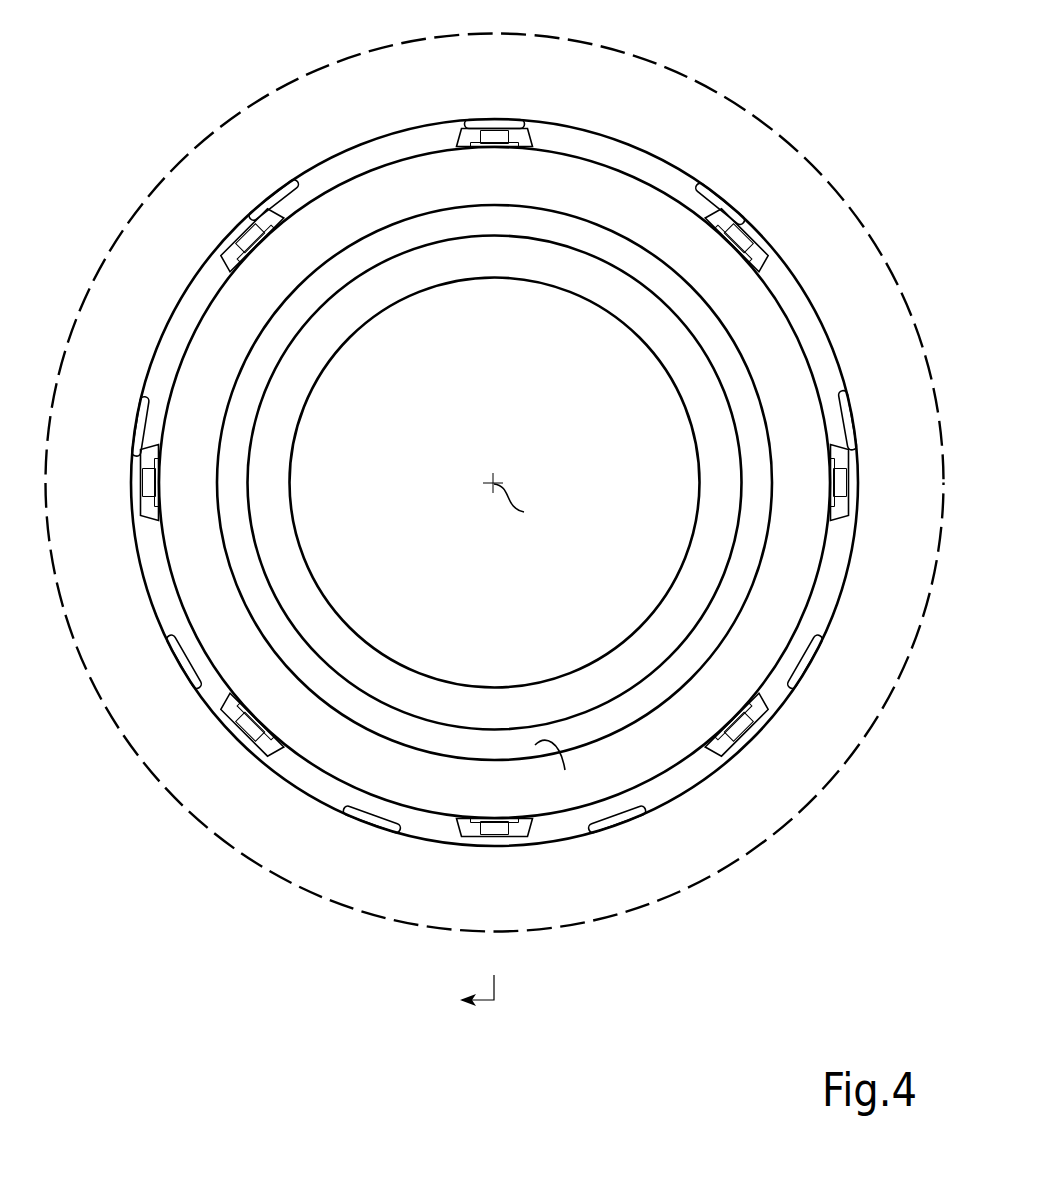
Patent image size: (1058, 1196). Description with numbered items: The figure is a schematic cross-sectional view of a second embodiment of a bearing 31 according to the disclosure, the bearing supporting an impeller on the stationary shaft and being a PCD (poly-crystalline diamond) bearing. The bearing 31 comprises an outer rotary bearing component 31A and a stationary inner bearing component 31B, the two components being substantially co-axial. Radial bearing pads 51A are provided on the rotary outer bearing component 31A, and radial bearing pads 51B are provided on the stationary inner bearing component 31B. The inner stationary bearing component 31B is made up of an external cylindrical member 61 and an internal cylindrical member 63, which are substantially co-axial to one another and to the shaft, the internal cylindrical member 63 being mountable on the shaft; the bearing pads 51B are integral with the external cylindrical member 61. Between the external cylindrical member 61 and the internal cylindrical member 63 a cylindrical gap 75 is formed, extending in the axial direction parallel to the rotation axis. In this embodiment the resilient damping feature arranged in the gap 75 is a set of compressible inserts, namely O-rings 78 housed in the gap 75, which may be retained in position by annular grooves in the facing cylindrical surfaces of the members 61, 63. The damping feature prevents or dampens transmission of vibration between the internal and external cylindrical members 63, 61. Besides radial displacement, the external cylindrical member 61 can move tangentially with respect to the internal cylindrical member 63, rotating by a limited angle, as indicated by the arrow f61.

The bearing 31 is at (228, 64).
The outer rotary bearing component 31A is at (320, 103).
The stationary inner bearing component 31B is at (198, 302).
The radial bearing pads 51A is at (487, 127).
The radial bearing pads 51B is at (533, 132).
The external cylindrical member 61 is at (773, 357).
The internal cylindrical member 63 is at (686, 357).
The cylindrical gap 75 is at (606, 726).
The O-rings 78 is at (565, 770).
The tangential displacement f61 is at (630, 24).